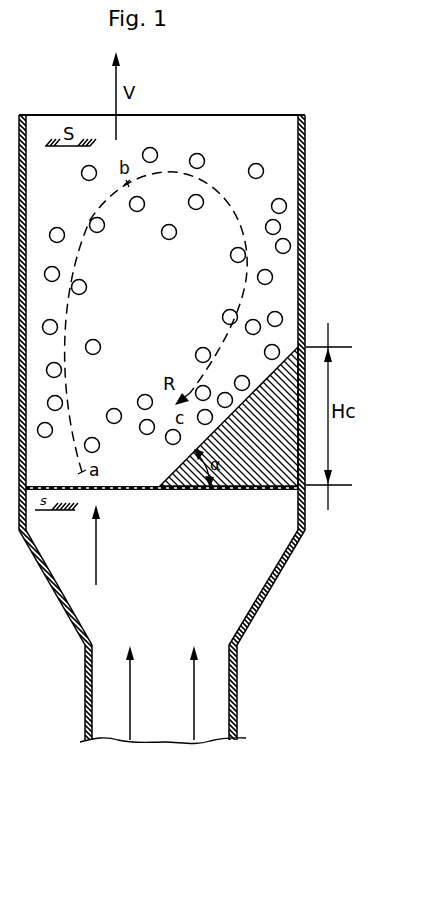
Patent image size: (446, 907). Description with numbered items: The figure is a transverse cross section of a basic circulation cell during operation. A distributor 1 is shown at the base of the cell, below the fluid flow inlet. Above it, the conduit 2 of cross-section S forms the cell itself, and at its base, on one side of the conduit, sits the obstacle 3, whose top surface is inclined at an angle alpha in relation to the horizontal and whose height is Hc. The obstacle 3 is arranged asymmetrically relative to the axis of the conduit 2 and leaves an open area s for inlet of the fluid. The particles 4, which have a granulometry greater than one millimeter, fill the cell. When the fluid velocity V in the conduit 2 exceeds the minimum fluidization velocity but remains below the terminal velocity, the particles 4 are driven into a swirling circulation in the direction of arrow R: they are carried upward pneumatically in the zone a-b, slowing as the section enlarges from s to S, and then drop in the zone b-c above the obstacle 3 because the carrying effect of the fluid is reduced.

The distributor 1 is at (146, 491).
The conduit 2 is at (305, 239).
The obstacle 3 is at (264, 477).
The particles 4 is at (164, 300).